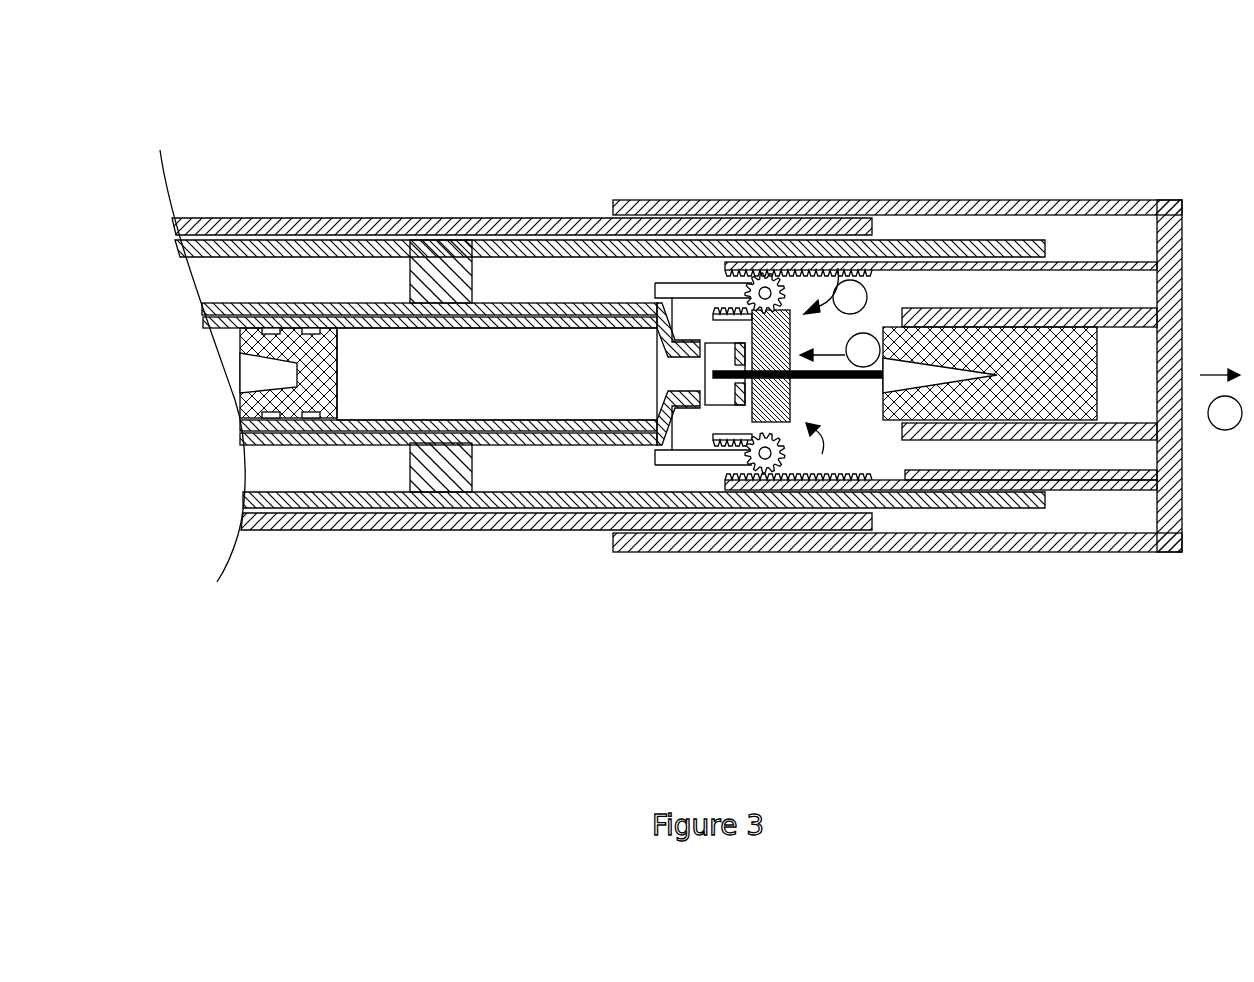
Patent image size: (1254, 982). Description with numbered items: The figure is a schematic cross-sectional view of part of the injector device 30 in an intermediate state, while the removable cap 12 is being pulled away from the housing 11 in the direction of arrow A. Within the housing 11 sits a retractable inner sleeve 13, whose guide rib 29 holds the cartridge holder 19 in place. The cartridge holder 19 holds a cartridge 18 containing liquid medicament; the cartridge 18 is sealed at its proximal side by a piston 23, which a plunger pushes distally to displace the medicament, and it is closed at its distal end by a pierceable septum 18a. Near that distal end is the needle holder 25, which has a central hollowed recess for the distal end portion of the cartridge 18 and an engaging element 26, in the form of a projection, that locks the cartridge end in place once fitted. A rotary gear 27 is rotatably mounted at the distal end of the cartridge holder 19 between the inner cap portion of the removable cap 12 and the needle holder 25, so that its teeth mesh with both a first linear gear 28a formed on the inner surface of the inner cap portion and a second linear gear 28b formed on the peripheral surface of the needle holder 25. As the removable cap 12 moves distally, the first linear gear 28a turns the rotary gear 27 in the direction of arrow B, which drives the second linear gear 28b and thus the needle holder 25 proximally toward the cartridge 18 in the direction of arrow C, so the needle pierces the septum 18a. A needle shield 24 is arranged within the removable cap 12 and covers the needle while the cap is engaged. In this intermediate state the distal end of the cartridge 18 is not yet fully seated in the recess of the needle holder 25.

The injector device 30 is at (641, 57).
The housing 11 is at (572, 530).
The removable cap 12 is at (1168, 530).
The inner sleeve 13 is at (322, 250).
The cartridge 18 is at (465, 382).
The pierceable septum 18a is at (738, 382).
The cartridge holder 19 is at (592, 312).
The piston 23 is at (313, 398).
The needle shield 24 is at (1040, 382).
The needle holder 25 is at (773, 417).
The engaging element 26 is at (702, 420).
The rotary gear 27 is at (768, 280).
The first linear gear 28a is at (865, 270).
The second linear gear 28b is at (782, 310).
The guide rib 29 is at (450, 270).